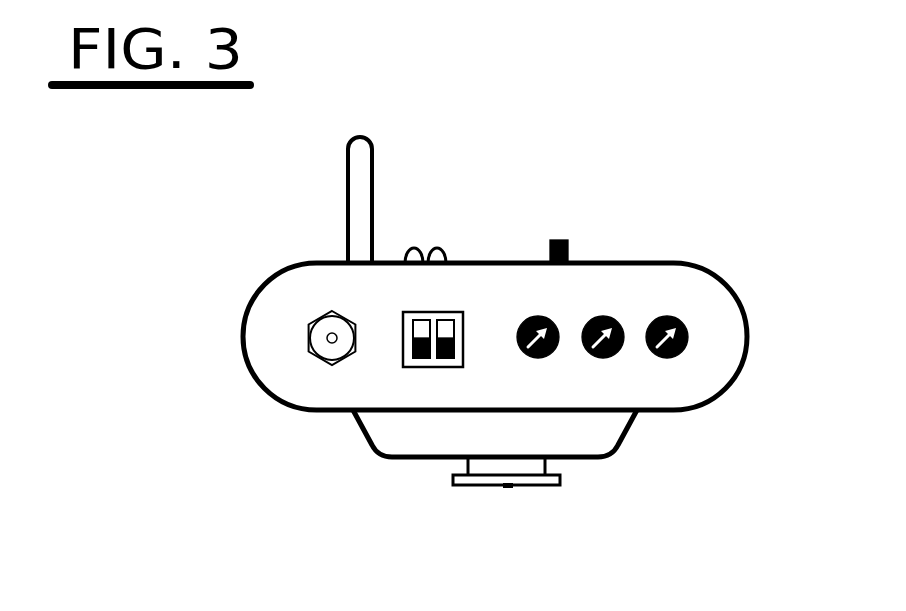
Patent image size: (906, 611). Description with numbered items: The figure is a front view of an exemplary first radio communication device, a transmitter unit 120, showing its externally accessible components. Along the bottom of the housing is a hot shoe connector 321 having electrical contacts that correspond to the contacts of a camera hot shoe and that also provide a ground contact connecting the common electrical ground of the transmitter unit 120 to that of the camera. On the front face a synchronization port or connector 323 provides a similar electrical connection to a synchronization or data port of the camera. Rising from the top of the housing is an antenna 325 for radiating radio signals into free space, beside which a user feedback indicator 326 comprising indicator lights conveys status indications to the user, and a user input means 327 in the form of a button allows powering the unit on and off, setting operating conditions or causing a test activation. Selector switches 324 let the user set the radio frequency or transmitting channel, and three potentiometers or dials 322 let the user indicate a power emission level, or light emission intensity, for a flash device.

The transmitter unit 120 is at (220, 383).
The hot shoe connector 321 is at (583, 484).
The potentiometers or dials 322 is at (679, 306).
The synchronization port or connector 323 is at (296, 319).
The selector switch or switches 324 is at (387, 305).
The antenna 325 is at (378, 148).
The user feedback indicator 326 is at (430, 242).
The user input means 327 is at (573, 233).